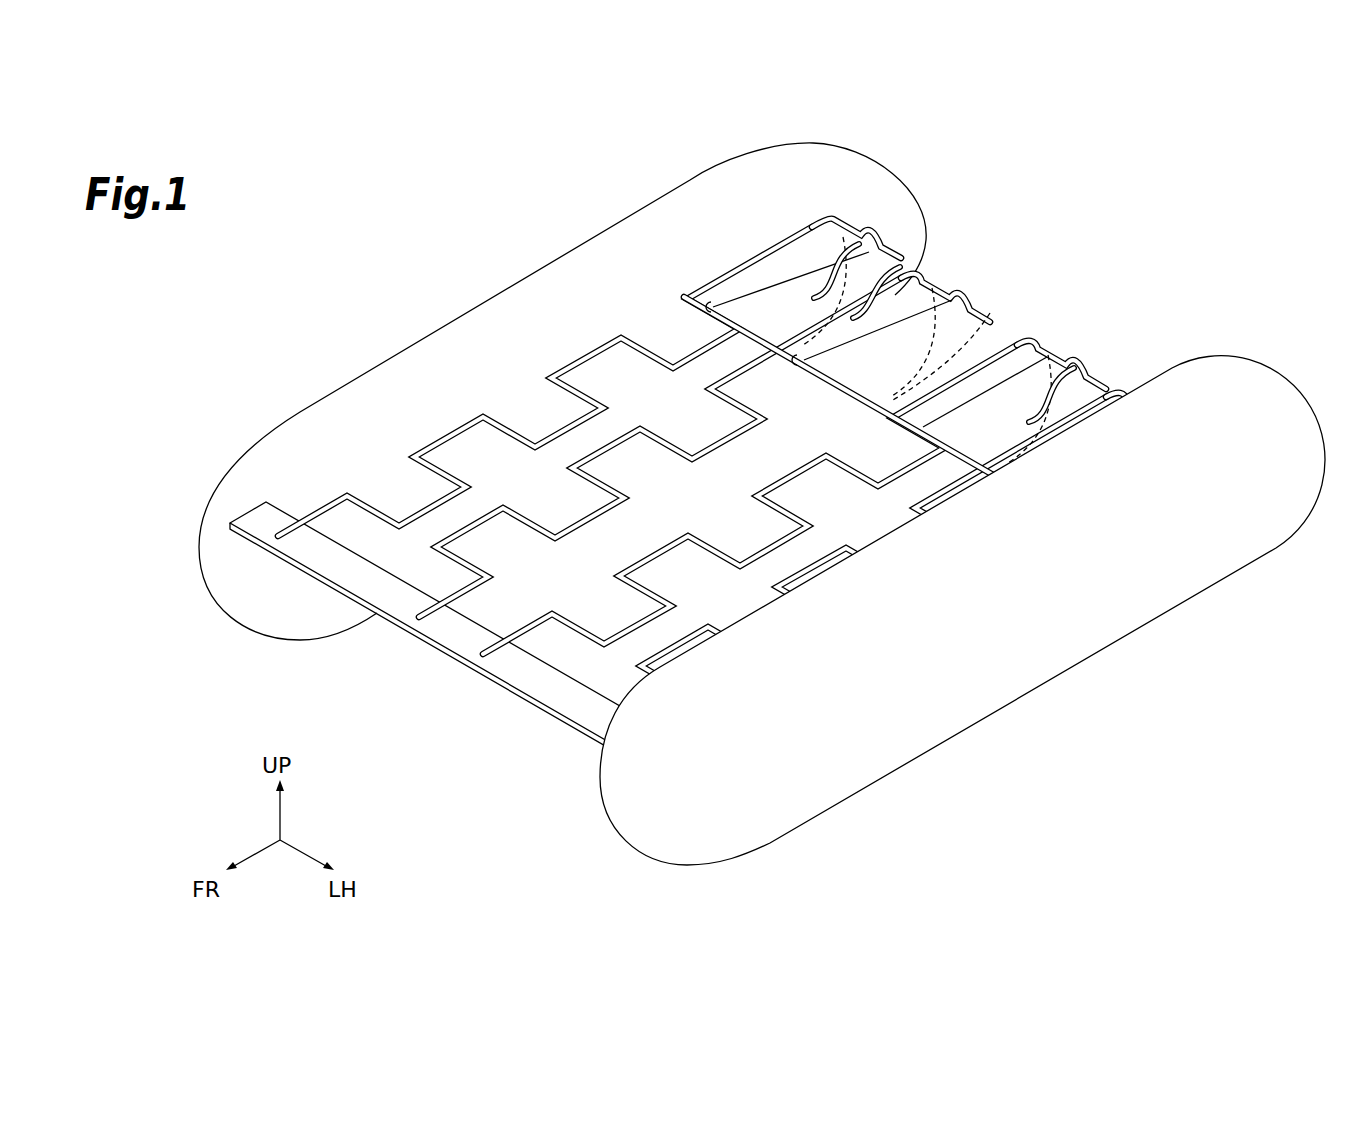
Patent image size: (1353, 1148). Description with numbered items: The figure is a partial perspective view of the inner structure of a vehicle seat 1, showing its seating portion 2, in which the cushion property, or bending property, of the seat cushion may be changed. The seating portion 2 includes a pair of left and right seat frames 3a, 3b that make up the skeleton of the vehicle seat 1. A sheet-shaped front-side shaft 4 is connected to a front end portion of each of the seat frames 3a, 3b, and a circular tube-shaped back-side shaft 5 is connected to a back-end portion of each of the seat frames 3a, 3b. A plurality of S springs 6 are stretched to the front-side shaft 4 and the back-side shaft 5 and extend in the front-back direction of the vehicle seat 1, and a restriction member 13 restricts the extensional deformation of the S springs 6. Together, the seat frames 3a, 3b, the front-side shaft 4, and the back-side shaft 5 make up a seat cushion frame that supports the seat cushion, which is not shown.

The vehicle seat 1 is at (762, 498).
The seating portion 2 is at (668, 487).
The seat frame 3a is at (582, 246).
The seat frame 3b is at (1185, 376).
The front-side shaft 4 is at (280, 522).
The back-side shaft 5 is at (940, 303).
The S springs 6 is at (460, 430).
The restriction member 13 is at (768, 280).